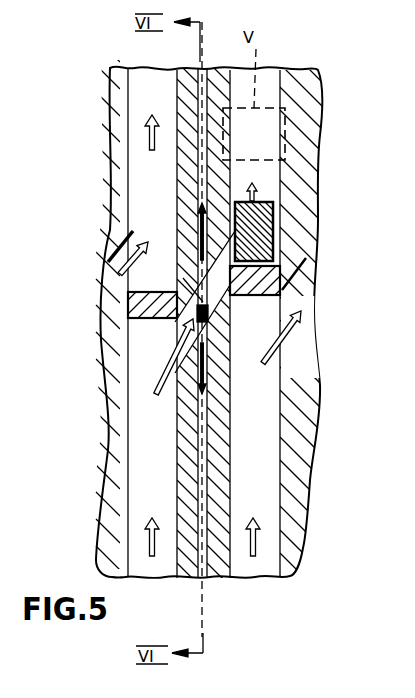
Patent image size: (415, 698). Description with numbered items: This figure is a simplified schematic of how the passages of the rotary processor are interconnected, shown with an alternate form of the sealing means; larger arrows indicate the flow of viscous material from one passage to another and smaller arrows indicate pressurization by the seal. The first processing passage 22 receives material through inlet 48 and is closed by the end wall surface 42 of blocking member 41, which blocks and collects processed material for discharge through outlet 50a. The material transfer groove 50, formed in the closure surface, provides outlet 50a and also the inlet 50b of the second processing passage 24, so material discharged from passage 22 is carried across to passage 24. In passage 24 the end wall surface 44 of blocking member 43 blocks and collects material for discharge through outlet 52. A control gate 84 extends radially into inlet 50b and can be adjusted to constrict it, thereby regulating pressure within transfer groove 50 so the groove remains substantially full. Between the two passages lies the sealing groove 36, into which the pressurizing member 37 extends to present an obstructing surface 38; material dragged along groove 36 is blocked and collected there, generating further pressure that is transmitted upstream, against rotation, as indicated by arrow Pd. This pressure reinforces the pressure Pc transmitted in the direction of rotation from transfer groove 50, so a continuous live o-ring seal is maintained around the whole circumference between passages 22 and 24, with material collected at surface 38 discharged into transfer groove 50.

The first processing passage 22 is at (168, 573).
The sealing groove 36 is at (196, 329).
The second processing passage 24 is at (265, 575).
The inlet 48 is at (128, 231).
The inlet 50b is at (200, 237).
The pressure transmitted from transfer groove Pc is at (200, 237).
The pressurizing member 37 is at (183, 281).
The blocking member 41 is at (152, 291).
The end wall surface 42 is at (166, 320).
The material transfer groove 50 is at (165, 354).
The outlet 50a is at (173, 368).
The blocking member 43 is at (306, 258).
The control gate 84 is at (265, 206).
The end wall surface 44 is at (268, 297).
The obstructing surface 38 is at (220, 330).
The outlet 52 is at (278, 380).
The pressure transmitted from obstructing surface Pd is at (220, 391).